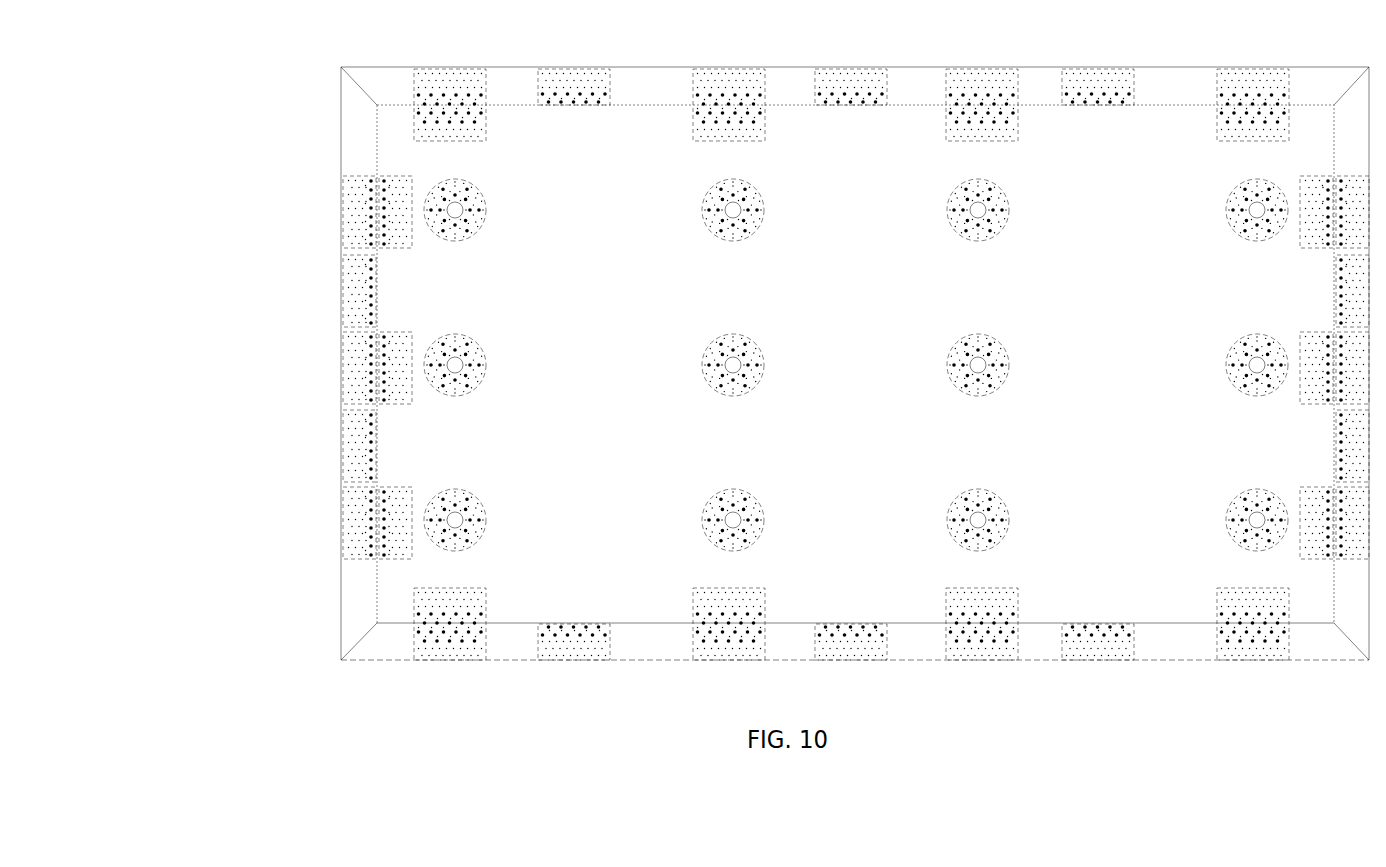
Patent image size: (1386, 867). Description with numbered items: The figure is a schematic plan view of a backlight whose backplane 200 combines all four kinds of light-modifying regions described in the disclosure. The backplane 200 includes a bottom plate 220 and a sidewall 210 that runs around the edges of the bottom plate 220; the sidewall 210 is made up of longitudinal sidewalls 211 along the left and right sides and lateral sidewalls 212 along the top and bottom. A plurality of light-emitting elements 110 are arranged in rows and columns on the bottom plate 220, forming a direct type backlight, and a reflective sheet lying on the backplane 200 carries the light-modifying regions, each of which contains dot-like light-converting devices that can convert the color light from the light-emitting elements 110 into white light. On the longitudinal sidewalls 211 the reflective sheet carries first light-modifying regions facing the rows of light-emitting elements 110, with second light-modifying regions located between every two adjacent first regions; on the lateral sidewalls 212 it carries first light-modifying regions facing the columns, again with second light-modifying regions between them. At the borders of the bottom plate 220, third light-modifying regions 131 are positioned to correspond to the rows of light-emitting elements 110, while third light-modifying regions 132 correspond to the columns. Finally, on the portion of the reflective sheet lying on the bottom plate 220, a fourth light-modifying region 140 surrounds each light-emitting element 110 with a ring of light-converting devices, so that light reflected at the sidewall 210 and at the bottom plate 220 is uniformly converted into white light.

The backplane 200 is at (125, 95).
The sidewall 210 is at (198, 125).
The longitudinal sidewall 211 is at (343, 145).
The lateral sidewall 212 is at (378, 93).
The bottom plate 220 is at (400, 130).
The light-emitting element 110 is at (485, 197).
The fourth light-modifying region 140 is at (460, 192).
The third light-modifying region 131 is at (393, 252).
The third light-modifying region 132 is at (692, 123).